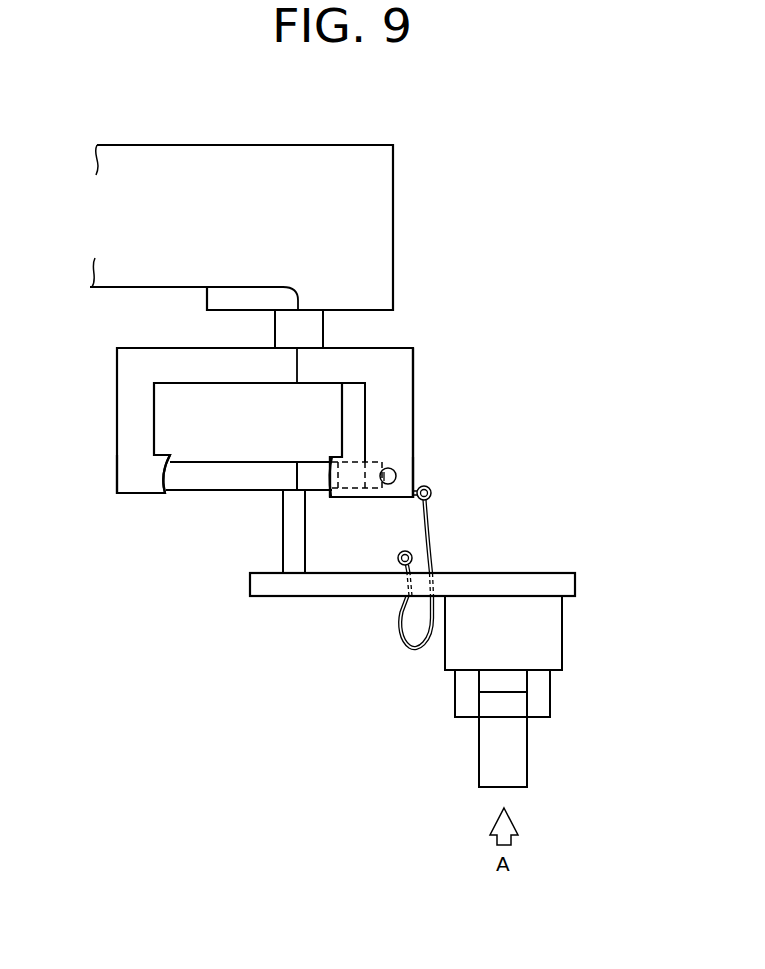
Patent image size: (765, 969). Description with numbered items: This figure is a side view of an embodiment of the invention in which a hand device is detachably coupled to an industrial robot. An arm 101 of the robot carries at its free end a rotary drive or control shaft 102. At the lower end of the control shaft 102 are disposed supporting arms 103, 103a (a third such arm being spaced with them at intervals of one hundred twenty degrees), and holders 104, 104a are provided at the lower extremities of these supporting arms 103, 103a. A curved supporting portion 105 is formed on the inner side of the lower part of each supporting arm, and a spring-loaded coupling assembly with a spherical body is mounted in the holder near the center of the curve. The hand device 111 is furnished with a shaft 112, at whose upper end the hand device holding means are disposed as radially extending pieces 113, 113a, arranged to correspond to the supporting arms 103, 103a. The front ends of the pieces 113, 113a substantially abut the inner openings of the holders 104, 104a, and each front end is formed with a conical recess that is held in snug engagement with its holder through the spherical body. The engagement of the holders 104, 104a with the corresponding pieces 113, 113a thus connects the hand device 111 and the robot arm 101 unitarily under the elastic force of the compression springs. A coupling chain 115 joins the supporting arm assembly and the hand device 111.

The arm 101 is at (378, 205).
The rotary drive or control shaft 102 is at (312, 327).
The supporting arm 103 is at (130, 427).
The supporting arm 103a is at (403, 393).
The holder 104 is at (130, 500).
The holder 104a is at (403, 476).
The curved supporting portion 105 is at (167, 475).
The hand device 111 is at (562, 585).
The shaft 112 is at (303, 550).
The through piece 113 is at (223, 477).
The through piece 113a is at (315, 477).
The coupling chain 115 is at (435, 539).